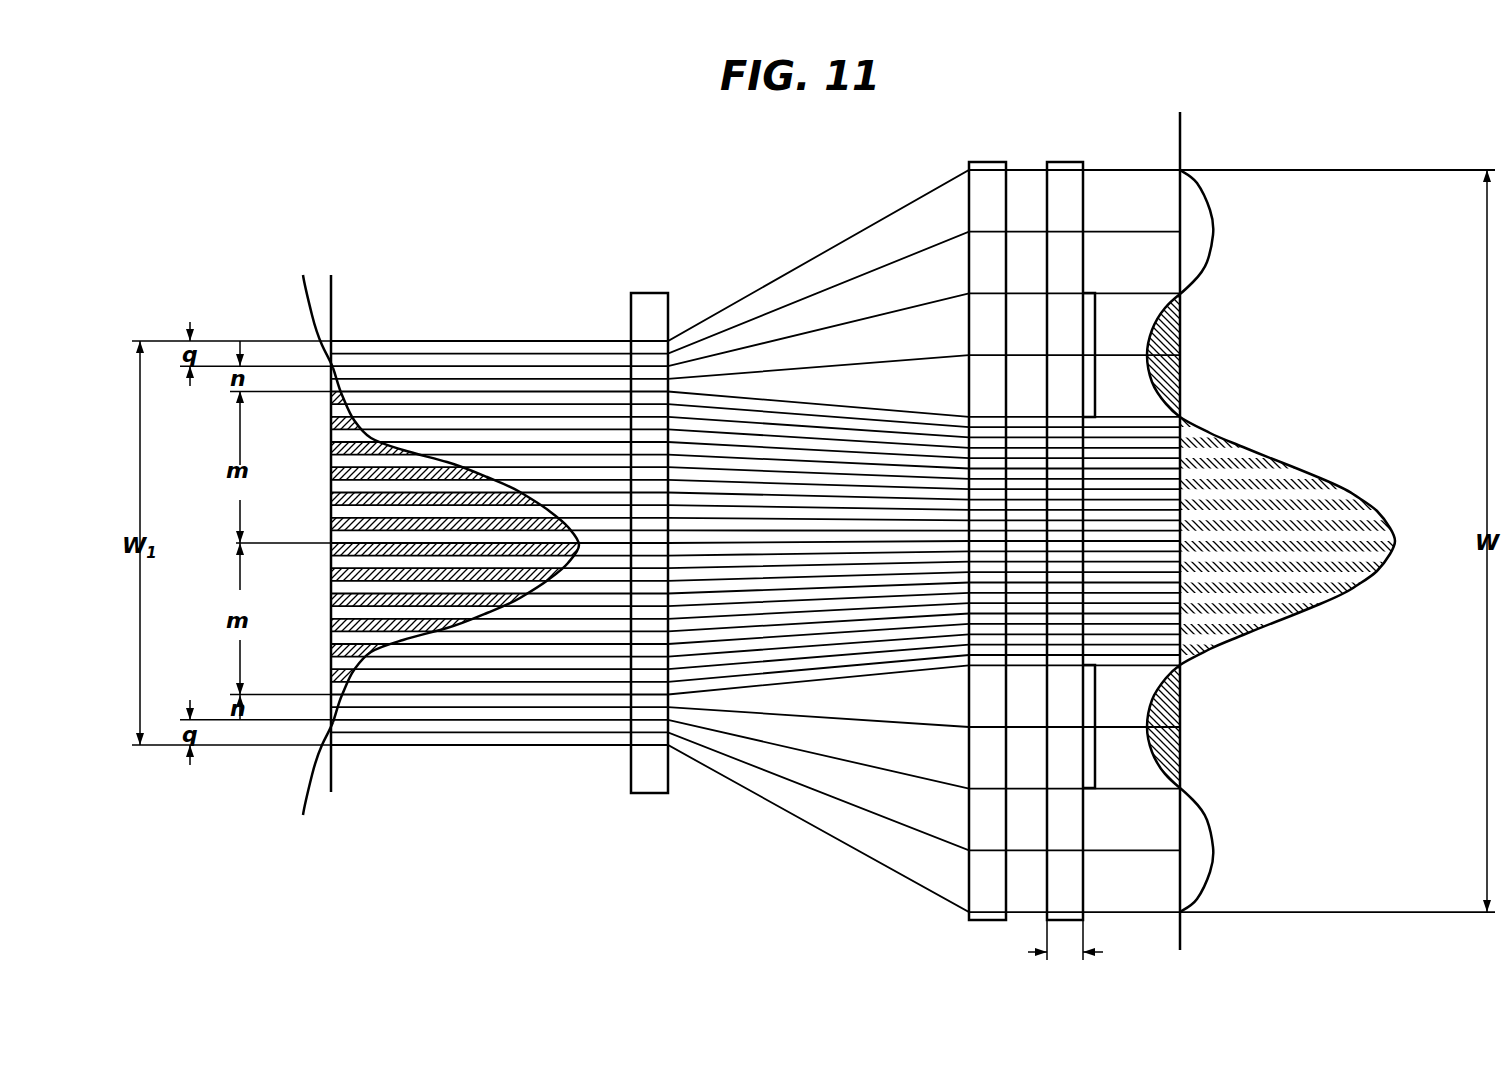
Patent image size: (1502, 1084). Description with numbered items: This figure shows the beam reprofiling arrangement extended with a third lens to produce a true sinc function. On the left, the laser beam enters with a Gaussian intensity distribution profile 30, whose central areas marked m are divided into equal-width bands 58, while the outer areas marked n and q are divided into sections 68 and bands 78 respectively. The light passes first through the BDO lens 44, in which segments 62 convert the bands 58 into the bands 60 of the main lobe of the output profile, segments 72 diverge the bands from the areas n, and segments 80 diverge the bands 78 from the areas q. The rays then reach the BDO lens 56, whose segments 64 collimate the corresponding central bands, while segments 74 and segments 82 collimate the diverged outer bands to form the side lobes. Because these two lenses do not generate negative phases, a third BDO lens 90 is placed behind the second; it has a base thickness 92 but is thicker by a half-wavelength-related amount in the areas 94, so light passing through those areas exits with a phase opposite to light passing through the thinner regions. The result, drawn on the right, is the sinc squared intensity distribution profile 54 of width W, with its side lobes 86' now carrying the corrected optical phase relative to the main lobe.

The Gaussian intensity distribution profile 30 is at (470, 462).
The BDO lens 44 is at (650, 293).
The intensity distribution profile 54 is at (1297, 620).
The BDO lens 56 is at (985, 162).
The bands 58 is at (331, 625).
The bands 60 is at (1180, 590).
The segments 62 is at (665, 558).
The segments 64 is at (972, 558).
The sections 68 is at (331, 712).
The segments 72 is at (668, 717).
The segments 74 is at (972, 760).
The bands 78 is at (312, 541).
The segments 80 is at (638, 735).
The segments 82 is at (975, 872).
The lobes 86' is at (1131, 541).
The BDO lens 90 is at (1063, 162).
The thickness 92 is at (1065, 952).
The areas 94 is at (1055, 760).